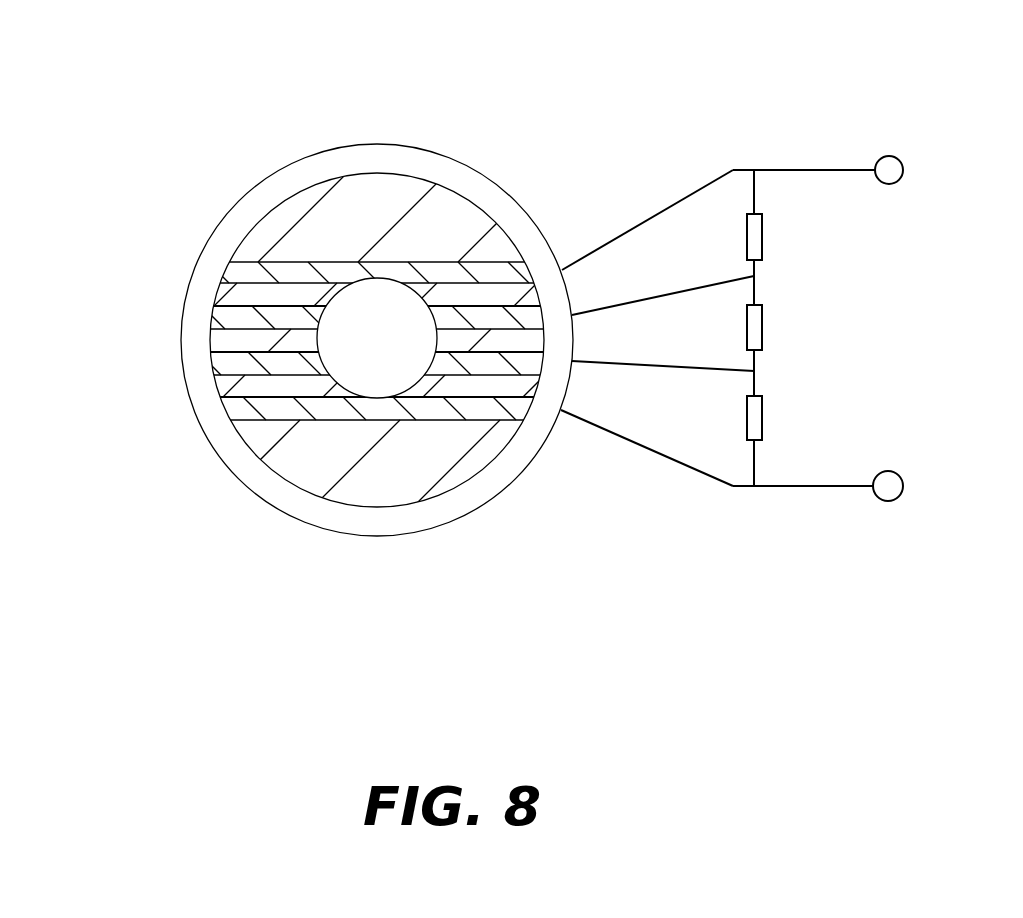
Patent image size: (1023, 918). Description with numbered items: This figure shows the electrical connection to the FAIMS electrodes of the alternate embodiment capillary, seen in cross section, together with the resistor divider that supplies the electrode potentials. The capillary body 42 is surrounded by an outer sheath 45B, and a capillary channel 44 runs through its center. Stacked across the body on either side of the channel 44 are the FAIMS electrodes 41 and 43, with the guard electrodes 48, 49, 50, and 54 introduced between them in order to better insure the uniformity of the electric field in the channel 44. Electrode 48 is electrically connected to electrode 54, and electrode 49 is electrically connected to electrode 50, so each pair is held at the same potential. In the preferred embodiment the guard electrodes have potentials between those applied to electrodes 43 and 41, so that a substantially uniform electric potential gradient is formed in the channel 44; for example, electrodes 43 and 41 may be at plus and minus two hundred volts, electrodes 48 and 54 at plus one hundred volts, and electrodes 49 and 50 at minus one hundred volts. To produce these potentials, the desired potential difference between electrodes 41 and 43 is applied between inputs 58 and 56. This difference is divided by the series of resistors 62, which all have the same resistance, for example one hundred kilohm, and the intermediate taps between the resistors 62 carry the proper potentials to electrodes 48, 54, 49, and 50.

The FAIMS electrode 41 is at (225, 412).
The body 42 is at (297, 463).
The FAIMS electrode 43 is at (233, 273).
The capillary channel 44 is at (370, 318).
The outer sheath 45B is at (288, 165).
The guard electrode 48 is at (500, 315).
The guard electrode 49 is at (499, 353).
The guard electrode 50 is at (223, 363).
The guard electrode 54 is at (215, 318).
The input 56 is at (849, 172).
The input 58 is at (848, 484).
The resistors 62 is at (797, 406).